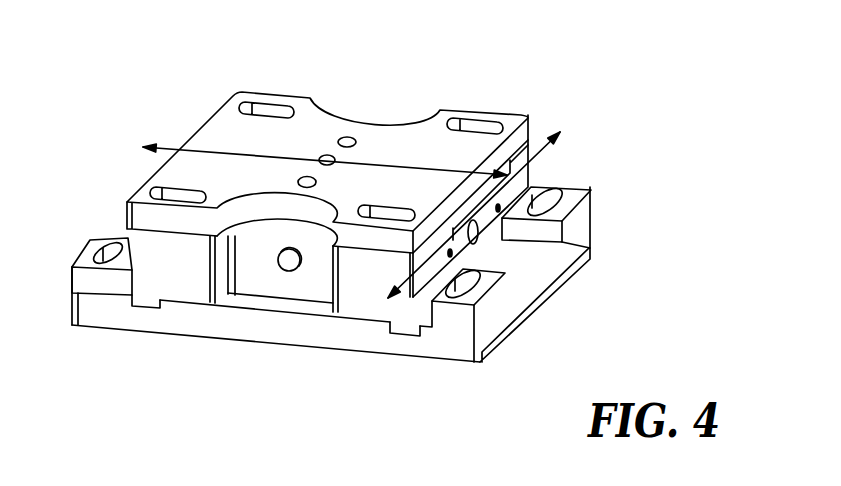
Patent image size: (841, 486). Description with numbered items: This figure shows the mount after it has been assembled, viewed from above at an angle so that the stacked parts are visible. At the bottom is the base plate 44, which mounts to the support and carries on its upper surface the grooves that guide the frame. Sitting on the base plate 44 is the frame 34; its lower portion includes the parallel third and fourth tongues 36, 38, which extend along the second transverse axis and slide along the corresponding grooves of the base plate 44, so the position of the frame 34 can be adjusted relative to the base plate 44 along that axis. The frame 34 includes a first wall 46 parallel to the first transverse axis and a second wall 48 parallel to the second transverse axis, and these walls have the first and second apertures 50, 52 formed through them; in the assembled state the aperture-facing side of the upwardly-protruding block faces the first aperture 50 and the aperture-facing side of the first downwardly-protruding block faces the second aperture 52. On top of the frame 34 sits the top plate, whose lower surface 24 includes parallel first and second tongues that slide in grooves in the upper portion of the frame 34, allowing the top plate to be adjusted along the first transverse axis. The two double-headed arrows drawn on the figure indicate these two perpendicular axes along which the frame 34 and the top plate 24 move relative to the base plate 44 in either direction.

The lower surface of the top plate 24 is at (322, 135).
The frame 34 is at (130, 237).
The third tongue 36 is at (142, 311).
The fourth tongue 38 is at (403, 334).
The base plate 44 is at (558, 263).
The first wall 46 is at (248, 277).
The second wall 48 is at (515, 192).
The first aperture 50 is at (289, 284).
The second aperture 52 is at (489, 253).